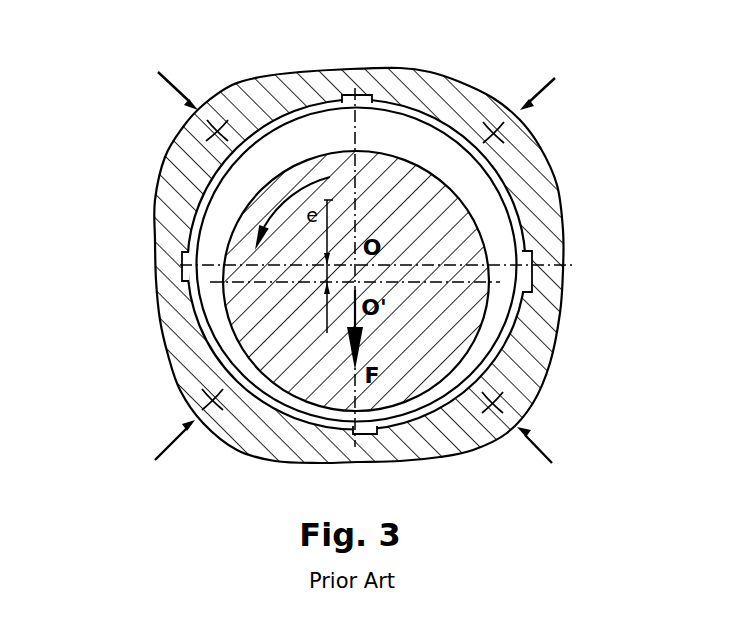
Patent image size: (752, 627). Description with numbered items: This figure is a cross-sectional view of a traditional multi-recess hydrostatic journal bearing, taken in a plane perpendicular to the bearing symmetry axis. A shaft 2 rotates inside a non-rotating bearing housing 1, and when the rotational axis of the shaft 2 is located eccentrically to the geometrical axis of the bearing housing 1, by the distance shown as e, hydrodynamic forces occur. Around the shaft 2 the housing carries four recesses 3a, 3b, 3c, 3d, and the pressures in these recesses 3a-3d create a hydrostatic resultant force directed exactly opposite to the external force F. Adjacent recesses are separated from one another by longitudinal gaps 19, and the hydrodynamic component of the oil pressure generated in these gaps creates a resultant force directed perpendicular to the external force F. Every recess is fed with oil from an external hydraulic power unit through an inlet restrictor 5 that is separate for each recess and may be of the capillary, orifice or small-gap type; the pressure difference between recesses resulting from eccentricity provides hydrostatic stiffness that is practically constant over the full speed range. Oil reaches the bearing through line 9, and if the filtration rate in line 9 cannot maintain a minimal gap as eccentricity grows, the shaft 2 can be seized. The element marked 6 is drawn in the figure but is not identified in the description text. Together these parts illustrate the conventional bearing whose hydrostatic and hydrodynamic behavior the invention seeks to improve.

The bearing housing 1 is at (397, 85).
The shaft 2 is at (397, 193).
The recess 3a is at (502, 185).
The recess 3b is at (207, 180).
The recess 3c is at (210, 352).
The recess 3d is at (500, 357).
The inlet restrictor 5 is at (203, 133).
The bearing bush 6 is at (518, 225).
The line 9 is at (178, 72).
The longitudinal gap 19 is at (347, 127).